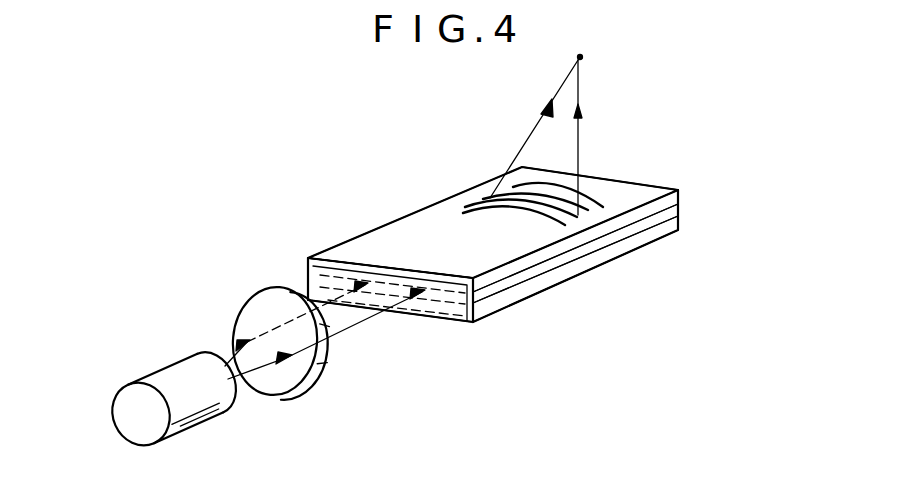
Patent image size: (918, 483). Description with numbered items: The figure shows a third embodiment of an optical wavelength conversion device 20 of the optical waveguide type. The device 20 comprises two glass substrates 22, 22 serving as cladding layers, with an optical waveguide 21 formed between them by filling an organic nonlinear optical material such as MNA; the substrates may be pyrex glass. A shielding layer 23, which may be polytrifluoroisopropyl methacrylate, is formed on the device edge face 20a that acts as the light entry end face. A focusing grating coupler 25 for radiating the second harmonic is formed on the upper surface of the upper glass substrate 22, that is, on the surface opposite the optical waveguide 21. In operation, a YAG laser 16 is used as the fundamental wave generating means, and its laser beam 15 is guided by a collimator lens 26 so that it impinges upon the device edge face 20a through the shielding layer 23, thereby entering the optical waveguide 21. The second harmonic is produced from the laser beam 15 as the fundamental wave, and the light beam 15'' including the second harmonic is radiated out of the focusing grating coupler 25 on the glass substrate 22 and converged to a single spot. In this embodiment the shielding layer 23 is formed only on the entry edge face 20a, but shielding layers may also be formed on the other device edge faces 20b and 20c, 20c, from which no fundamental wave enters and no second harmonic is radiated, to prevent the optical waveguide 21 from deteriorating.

The laser beam 15 is at (326, 333).
The light beam including the second harmonic 15'' is at (531, 135).
The YAG laser 16 is at (183, 360).
The optical wavelength conversion device 20 is at (425, 186).
The device edge face 20a is at (435, 313).
The device edge face 20b is at (679, 207).
The device edge faces 20c is at (366, 233).
The optical waveguide 21 is at (568, 260).
The glass substrates 22 is at (618, 188).
The shielding layer 23 is at (407, 272).
The focusing grating coupler 25 is at (548, 182).
The collimator lens 26 is at (251, 302).